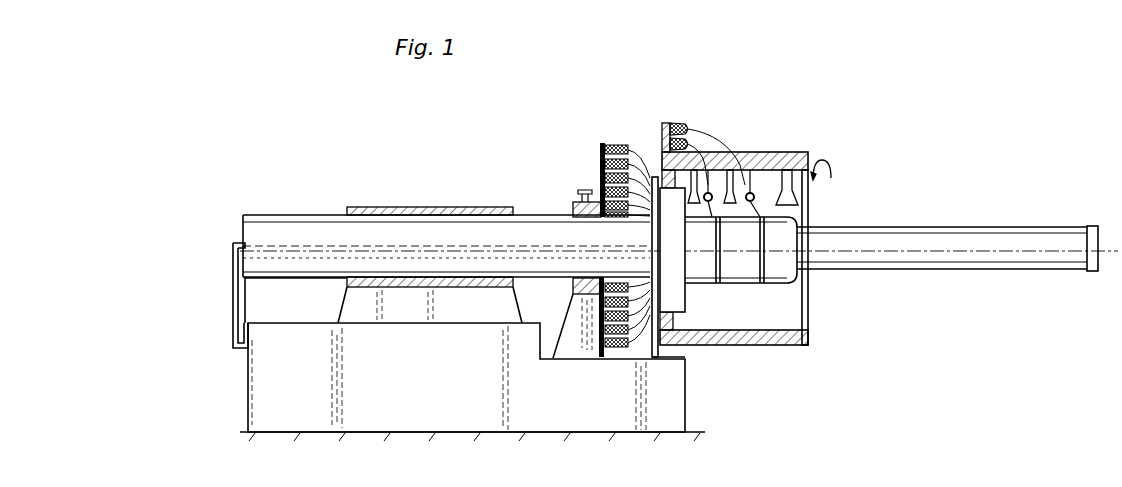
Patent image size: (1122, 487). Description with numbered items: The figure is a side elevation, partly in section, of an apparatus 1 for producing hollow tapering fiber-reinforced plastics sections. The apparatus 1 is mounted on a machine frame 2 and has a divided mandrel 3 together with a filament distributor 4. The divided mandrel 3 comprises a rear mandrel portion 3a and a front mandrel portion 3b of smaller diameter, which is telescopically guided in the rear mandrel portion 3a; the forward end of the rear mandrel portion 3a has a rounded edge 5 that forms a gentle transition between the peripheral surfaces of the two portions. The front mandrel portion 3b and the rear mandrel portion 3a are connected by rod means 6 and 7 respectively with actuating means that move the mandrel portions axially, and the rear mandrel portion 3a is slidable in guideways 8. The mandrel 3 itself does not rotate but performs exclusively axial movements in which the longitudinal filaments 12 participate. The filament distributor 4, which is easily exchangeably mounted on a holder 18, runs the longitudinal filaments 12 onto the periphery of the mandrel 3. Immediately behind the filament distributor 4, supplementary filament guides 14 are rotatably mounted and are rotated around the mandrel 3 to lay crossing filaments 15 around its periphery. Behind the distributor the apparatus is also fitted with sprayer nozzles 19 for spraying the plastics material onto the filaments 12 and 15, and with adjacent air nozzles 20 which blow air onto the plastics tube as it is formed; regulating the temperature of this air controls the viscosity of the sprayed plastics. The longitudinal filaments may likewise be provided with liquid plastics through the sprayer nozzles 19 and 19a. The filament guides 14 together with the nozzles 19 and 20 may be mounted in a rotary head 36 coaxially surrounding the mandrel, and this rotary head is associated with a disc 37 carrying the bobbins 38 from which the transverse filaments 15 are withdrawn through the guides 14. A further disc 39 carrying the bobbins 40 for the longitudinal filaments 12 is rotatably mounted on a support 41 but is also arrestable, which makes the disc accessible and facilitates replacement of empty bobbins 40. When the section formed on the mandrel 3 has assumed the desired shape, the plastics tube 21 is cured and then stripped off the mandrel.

The apparatus 1 is at (545, 160).
The machine frame 2 is at (395, 415).
The divided mandrel 3 is at (847, 290).
The rear mandrel portion 3a is at (290, 218).
The front mandrel portion 3b is at (973, 262).
The filament distributor 4 is at (682, 303).
The rounded edge 5 is at (806, 275).
The rod means 6 is at (233, 272).
The rod means 7 is at (238, 312).
The guideways 8 is at (407, 210).
The longitudinal filaments 12 is at (650, 185).
The supplementary filament guides 14 is at (727, 175).
The crossing filaments 15 is at (696, 172).
The holder 18 is at (663, 360).
The sprayer nozzles 19 is at (748, 185).
The sprayer nozzle 19a is at (705, 190).
The air nozzles 20 is at (810, 152).
The plastics tube 21 is at (1070, 270).
The rotary head 36 is at (809, 152).
The disc 37 is at (665, 128).
The bobbins 38 is at (676, 142).
The disc 39 is at (602, 170).
The bobbins 40 is at (612, 350).
The support 41 is at (575, 345).